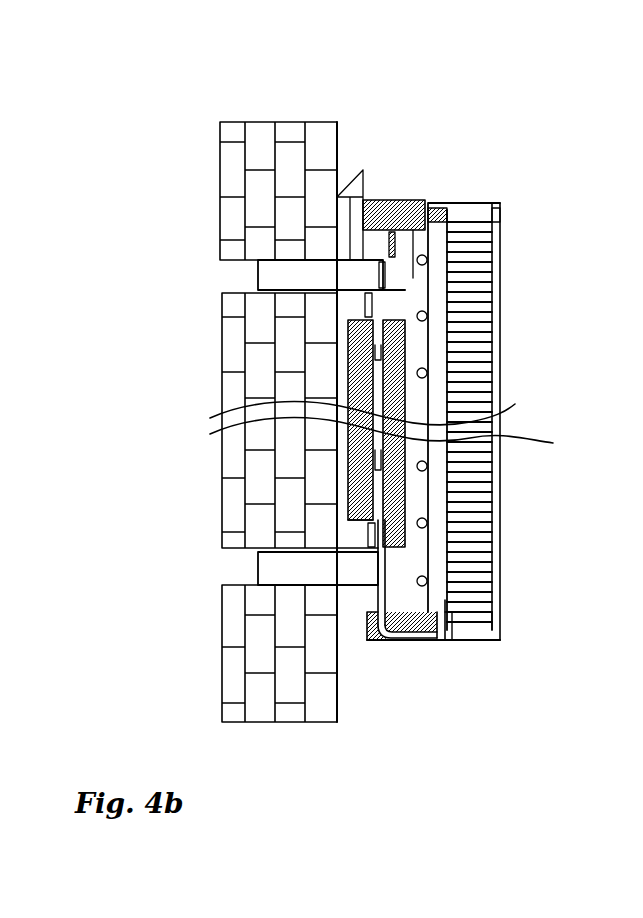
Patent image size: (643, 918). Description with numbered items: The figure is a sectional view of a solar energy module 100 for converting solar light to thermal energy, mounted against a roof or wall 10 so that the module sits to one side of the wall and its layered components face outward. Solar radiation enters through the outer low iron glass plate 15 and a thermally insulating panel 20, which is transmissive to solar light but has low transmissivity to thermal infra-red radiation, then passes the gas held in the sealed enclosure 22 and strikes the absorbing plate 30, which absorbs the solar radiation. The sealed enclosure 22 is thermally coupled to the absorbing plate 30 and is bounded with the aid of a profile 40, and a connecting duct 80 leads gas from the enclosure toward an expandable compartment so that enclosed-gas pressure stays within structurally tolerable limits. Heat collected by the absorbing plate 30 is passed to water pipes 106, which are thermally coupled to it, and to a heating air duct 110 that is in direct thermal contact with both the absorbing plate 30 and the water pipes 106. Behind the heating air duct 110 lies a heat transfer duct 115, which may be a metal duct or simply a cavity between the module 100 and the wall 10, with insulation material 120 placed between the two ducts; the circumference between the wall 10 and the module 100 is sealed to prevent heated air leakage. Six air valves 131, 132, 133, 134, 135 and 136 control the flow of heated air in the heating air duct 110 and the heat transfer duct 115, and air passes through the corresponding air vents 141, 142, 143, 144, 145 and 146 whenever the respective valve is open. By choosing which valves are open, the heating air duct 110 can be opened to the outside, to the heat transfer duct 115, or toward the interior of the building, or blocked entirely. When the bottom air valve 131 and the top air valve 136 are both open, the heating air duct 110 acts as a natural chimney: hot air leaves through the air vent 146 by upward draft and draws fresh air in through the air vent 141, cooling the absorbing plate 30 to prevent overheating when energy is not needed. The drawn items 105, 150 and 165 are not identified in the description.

The solar energy module 100 is at (183, 147).
The wall 10 is at (340, 548).
The low iron glass plate 15 is at (498, 593).
The thermally insulating panel 20 is at (478, 545).
The sealed enclosure 22 is at (435, 497).
The absorbing plate 30 is at (445, 203).
The profile 40 is at (500, 641).
The connecting duct 80 is at (443, 640).
The wall anchor 105 is at (346, 544).
The water pipes 106 is at (422, 375).
The heating air duct 110 is at (413, 200).
The heat transfer duct 115 is at (345, 345).
The insulation material 120 is at (403, 328).
The air valve 131 is at (400, 642).
The air valve 132 is at (378, 567).
The air valve 133 is at (374, 530).
The air valve 134 is at (365, 297).
The air valve 135 is at (378, 272).
The air valve 136 is at (393, 200).
The air vent 141 is at (368, 643).
The air vent 142 is at (258, 563).
The air vent 143 is at (362, 535).
The air vent 144 is at (366, 316).
The air vent 145 is at (258, 272).
The air vent 146 is at (350, 197).
The bottom end block 150 is at (500, 632).
The spacer 165 is at (405, 348).